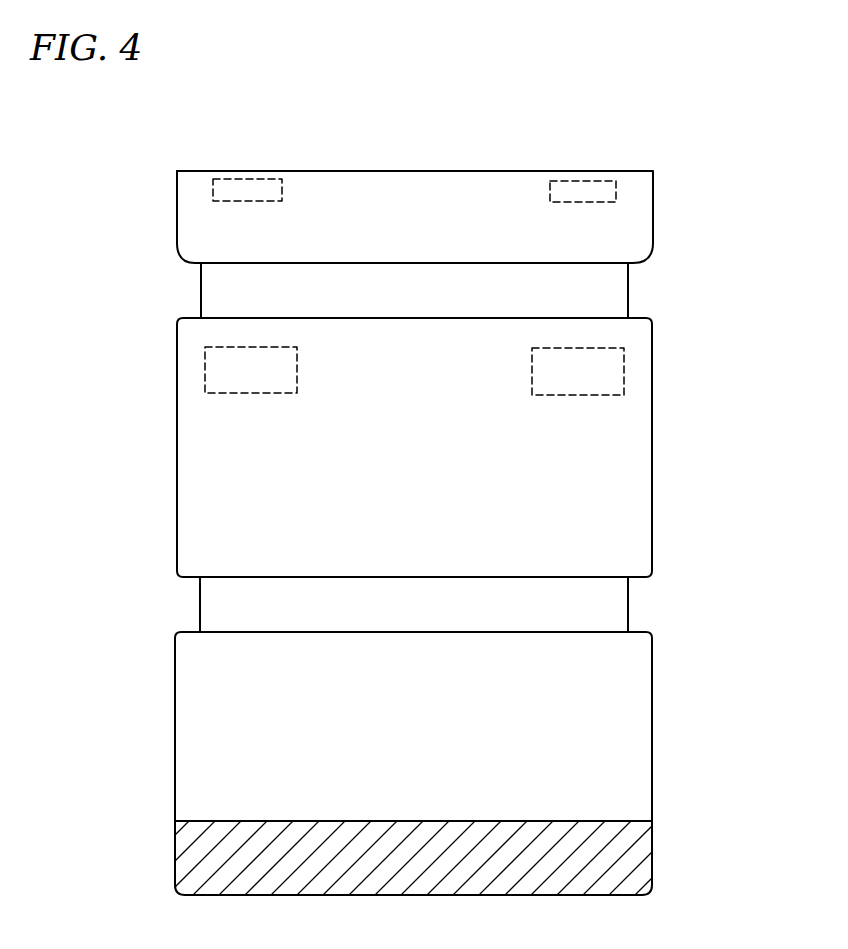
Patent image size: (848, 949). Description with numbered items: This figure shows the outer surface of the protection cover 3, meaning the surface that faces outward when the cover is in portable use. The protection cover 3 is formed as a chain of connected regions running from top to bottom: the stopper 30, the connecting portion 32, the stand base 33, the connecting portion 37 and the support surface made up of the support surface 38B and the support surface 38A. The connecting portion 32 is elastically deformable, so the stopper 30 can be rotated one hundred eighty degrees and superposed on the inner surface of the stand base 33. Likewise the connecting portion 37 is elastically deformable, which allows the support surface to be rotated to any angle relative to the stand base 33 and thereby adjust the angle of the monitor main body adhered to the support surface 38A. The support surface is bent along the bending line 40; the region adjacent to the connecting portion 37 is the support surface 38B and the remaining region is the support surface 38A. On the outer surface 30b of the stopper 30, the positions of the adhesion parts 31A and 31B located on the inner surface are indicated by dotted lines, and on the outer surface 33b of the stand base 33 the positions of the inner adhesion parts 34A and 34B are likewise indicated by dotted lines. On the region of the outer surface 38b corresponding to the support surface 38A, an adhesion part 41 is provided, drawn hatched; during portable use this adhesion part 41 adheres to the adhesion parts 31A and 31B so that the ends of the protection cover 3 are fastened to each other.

The protection cover 3 is at (425, 122).
The stopper 30 is at (653, 208).
The outer surface of the stopper 30b is at (205, 228).
The adhesion part 31A is at (247, 177).
The adhesion part 31B is at (585, 178).
The connecting portion 32 is at (628, 293).
The stand base 33 is at (652, 458).
The outer surface of the stand base 33b is at (200, 465).
The adhesion part 34A is at (205, 371).
The adhesion part 34B is at (624, 370).
The connecting portion 37 is at (628, 607).
The support surface 38A is at (652, 857).
The support surface 38B is at (652, 733).
The outer surface of the support surface 38b is at (205, 737).
The bending line 40 is at (652, 822).
The adhesion part 41 is at (192, 852).